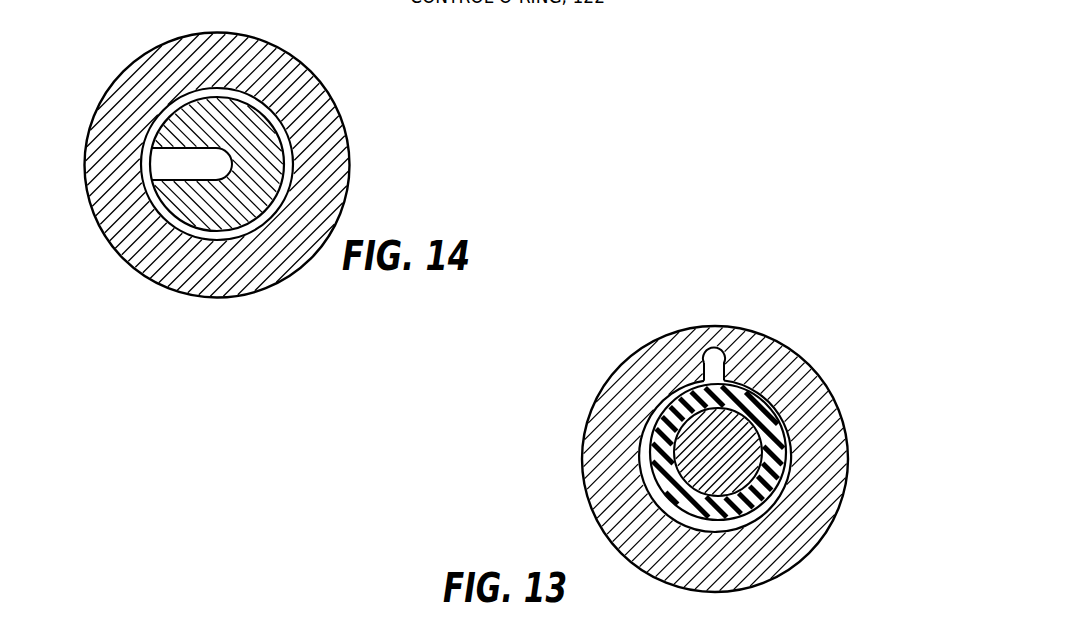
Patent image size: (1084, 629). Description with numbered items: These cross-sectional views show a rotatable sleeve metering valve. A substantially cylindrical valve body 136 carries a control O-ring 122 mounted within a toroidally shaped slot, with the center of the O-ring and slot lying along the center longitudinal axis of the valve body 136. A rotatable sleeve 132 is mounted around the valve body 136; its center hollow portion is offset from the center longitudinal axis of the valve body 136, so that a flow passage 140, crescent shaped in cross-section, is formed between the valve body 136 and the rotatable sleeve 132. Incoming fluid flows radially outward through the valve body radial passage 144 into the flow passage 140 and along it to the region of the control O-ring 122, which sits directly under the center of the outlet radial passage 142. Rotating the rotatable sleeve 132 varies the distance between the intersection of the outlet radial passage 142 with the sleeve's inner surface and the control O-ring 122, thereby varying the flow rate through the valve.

In FIG. 13, the control O-ring 122 is at (643, 468).
In FIG. 14, the rotatable sleeve 132 is at (333, 187).
In FIG. 13, the rotatable sleeve 132 is at (618, 545).
In FIG. 14, the valve body 136 is at (283, 122).
In FIG. 13, the valve body 136 is at (646, 497).
In FIG. 14, the flow passage 140 is at (158, 113).
In FIG. 13, the flow passage 140 is at (650, 420).
In FIG. 13, the outlet radial passage 142 is at (733, 372).
In FIG. 14, the valve body radial passage 144 is at (175, 169).